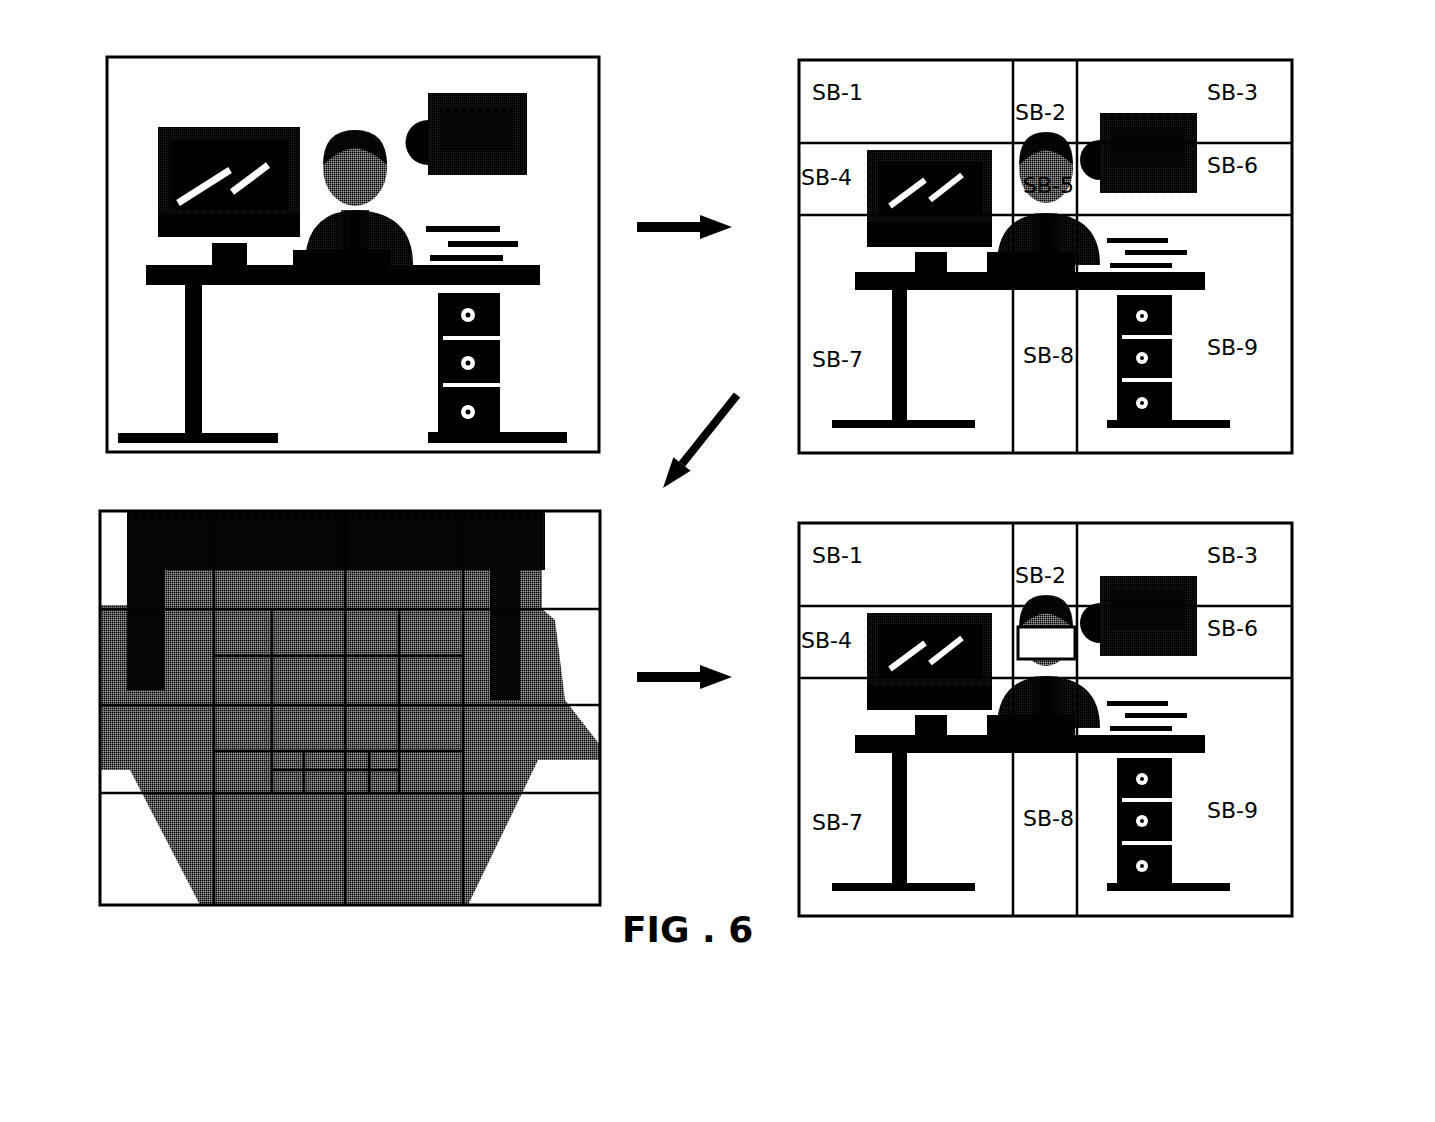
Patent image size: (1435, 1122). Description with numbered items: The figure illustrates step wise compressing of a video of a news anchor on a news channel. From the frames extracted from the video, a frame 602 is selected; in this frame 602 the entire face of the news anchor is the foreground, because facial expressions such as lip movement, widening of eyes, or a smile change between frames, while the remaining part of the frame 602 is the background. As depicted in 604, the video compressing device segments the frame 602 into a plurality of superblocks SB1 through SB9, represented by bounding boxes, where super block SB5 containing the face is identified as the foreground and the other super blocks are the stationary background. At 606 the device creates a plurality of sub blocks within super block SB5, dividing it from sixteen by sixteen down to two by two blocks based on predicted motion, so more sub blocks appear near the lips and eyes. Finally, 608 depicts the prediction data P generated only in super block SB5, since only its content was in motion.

The frame 602 is at (600, 155).
The segmentation of the frame into superblocks 604 is at (1292, 143).
The creation of sub blocks within the super block 606 is at (600, 609).
The generation of prediction data in the super block 608 is at (1292, 606).